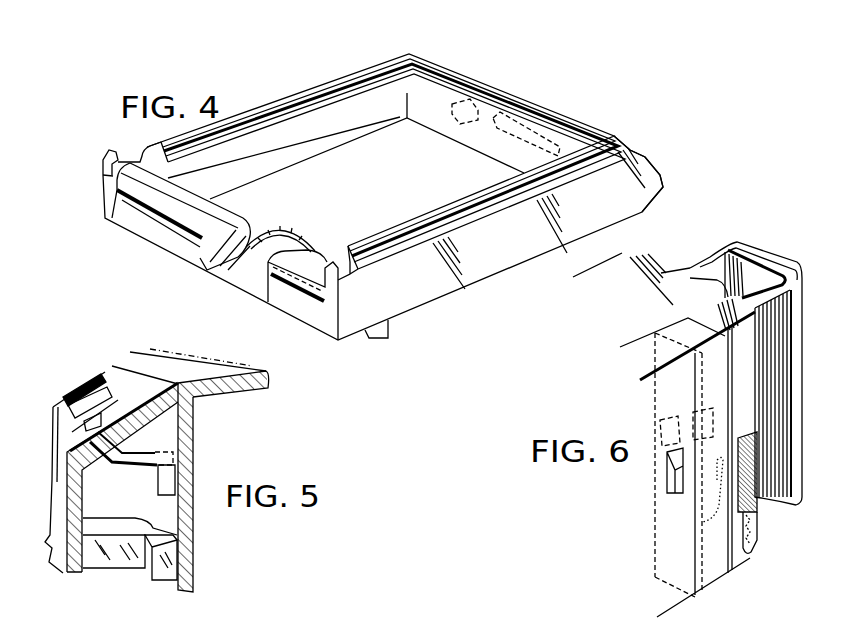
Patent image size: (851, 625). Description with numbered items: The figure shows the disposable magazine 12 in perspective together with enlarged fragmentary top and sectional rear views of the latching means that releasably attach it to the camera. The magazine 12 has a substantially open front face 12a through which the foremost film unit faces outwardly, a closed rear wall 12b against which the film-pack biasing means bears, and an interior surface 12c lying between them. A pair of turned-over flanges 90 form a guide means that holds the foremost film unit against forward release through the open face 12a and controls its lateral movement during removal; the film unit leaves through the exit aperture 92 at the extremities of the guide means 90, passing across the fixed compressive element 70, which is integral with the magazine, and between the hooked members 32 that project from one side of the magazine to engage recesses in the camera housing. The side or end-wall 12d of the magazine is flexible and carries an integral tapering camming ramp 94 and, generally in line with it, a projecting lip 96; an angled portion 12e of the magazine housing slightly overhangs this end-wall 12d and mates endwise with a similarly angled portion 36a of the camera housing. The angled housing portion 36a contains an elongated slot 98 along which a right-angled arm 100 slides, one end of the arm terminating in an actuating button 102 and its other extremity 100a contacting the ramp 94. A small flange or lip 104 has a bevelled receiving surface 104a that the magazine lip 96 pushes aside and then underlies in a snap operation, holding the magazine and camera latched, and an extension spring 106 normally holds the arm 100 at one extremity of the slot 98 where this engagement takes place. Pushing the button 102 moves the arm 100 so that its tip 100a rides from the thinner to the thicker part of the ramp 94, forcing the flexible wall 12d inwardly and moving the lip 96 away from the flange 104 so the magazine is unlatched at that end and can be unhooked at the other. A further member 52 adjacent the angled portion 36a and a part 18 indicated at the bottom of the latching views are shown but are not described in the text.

In FIG. 4, the magazine 12 is at (463, 298).
In FIG. 4, the open face 12a is at (425, 97).
In FIG. 4, the closed rear wall 12b is at (386, 369).
In FIG. 4, the tray floor 12c is at (368, 194).
In FIG. 5, the end-wall 12d is at (194, 415).
In FIG. 4, the angled portion of magazine housing 12e is at (650, 203).
In FIG. 5, the angled portion of magazine housing 12e is at (130, 354).
In FIG. 6, the angled portion of magazine housing 12e is at (688, 342).
In FIG. 5, the cabinet 18 is at (290, 620).
In FIG. 6, the cabinet 18 is at (618, 620).
In FIG. 4, the hooked members 32 is at (104, 155).
In FIG. 5, the angled portion of camera housing 36a is at (118, 356).
In FIG. 6, the angled portion of camera housing 36a is at (716, 324).
In FIG. 6, the handle 52 is at (760, 253).
In FIG. 4, the compressive element 70 is at (250, 243).
In FIG. 4, the turned-over flanges 90 is at (280, 127).
In FIG. 4, the exit aperture 92 is at (163, 182).
In FIG. 5, the camming ramp 94 is at (159, 490).
In FIG. 6, the camming ramp 94 is at (666, 456).
In FIG. 4, the projecting lip 96 is at (471, 100).
In FIG. 5, the projecting lip 96 is at (160, 582).
In FIG. 6, the projecting lip 96 is at (660, 420).
In FIG. 5, the elongated slot 98 is at (66, 436).
In FIG. 5, the right-angled arm 100 is at (125, 465).
In FIG. 5, the arm extremity 100a is at (174, 457).
In FIG. 5, the actuating button 102 is at (76, 392).
In FIG. 6, the actuating button 102 is at (707, 517).
In FIG. 5, the flange 104 is at (102, 570).
In FIG. 6, the flange 104 is at (683, 414).
In FIG. 5, the bevelled receiving surface 104a is at (153, 527).
In FIG. 6, the extension spring 106 is at (752, 557).